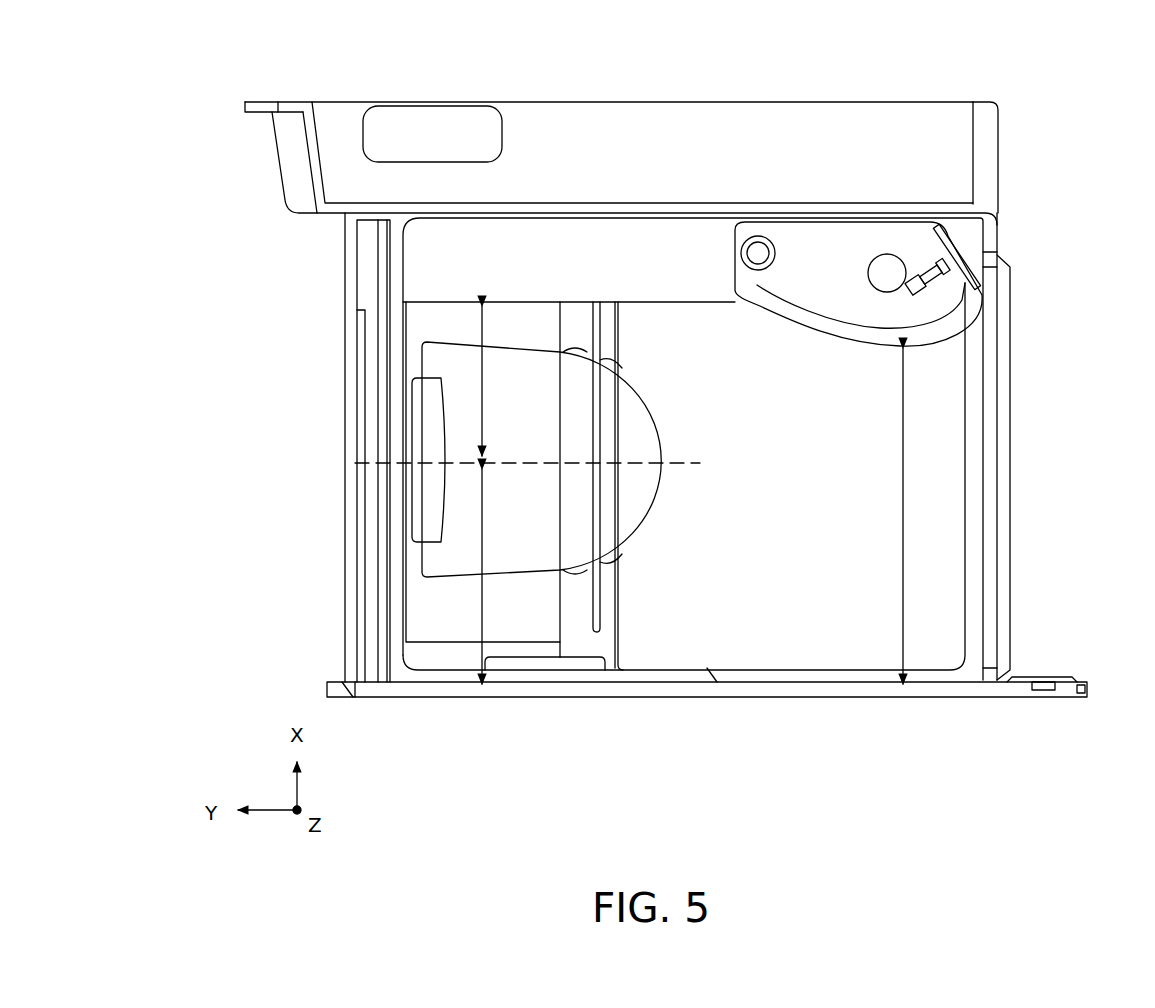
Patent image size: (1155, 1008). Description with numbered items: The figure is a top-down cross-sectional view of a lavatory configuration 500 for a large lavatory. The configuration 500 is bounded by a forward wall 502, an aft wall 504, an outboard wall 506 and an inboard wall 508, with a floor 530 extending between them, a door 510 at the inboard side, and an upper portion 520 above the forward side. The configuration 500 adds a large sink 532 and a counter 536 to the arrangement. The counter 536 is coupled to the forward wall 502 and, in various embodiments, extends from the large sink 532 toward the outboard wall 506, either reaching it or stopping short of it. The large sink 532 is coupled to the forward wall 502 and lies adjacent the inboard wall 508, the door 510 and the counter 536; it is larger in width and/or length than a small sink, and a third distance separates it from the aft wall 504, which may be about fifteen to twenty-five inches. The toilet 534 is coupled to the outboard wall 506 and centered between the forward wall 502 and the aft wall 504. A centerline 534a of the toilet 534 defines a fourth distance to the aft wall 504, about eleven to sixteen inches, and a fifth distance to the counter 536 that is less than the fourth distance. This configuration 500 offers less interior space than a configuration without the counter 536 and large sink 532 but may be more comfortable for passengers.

The lavatory configuration 500 is at (116, 148).
The forward wall 502 is at (718, 98).
The aft wall 504 is at (688, 700).
The outboard wall 506 is at (345, 388).
The inboard wall 508 is at (998, 244).
The door 510 is at (1010, 478).
The upper portion 520 is at (943, 113).
The floor 530 is at (684, 482).
The large sink 532 is at (838, 322).
The toilet 534 is at (607, 408).
The centerline 534a is at (700, 463).
The counter 536 is at (693, 449).